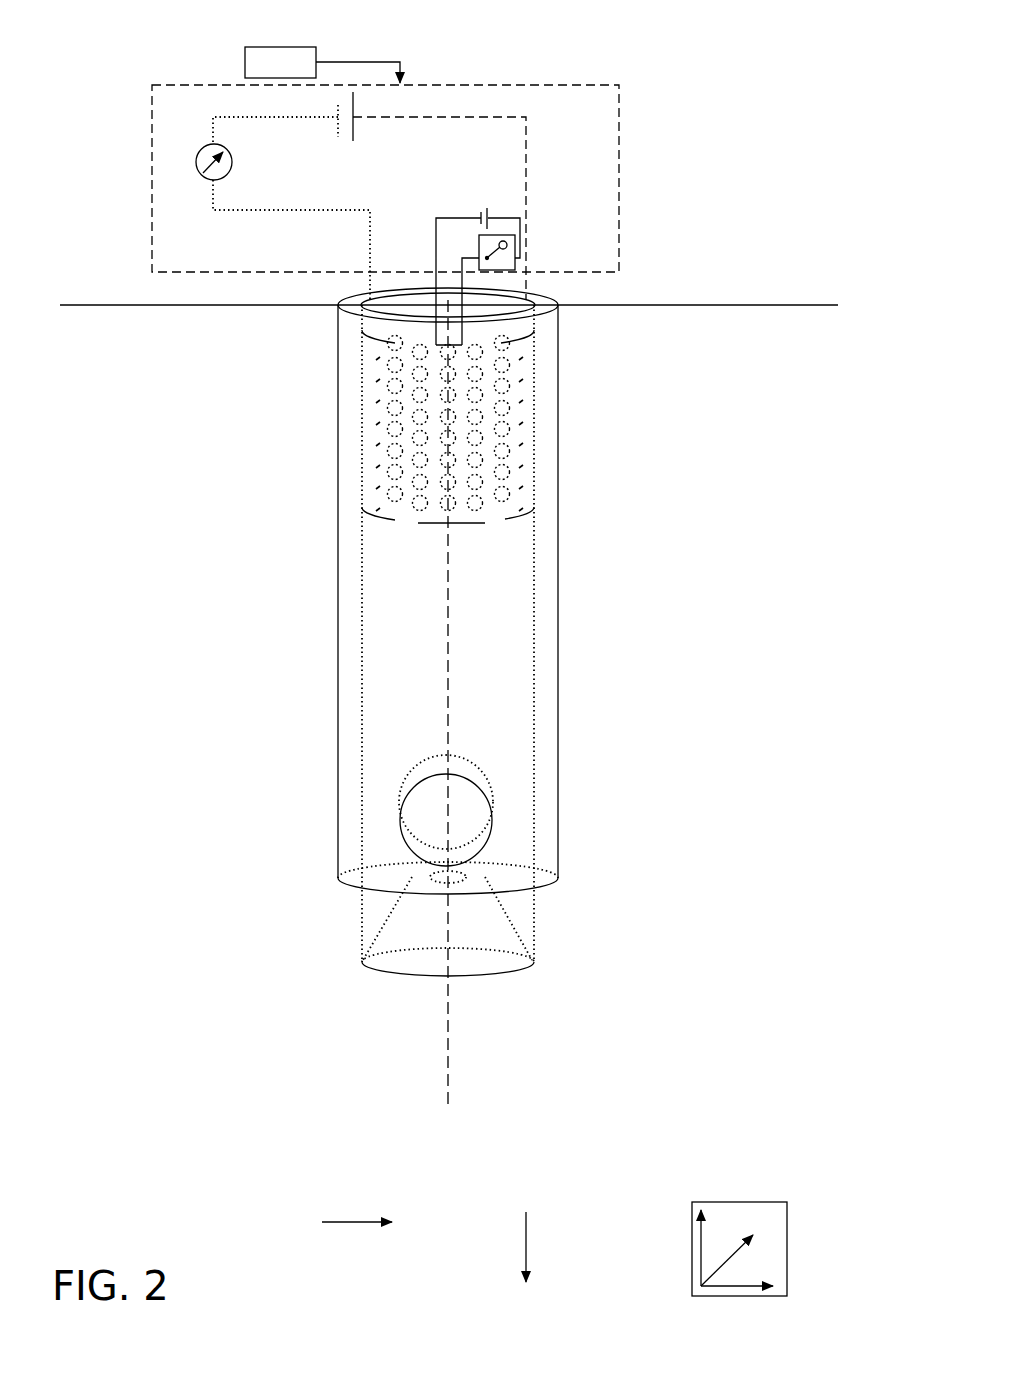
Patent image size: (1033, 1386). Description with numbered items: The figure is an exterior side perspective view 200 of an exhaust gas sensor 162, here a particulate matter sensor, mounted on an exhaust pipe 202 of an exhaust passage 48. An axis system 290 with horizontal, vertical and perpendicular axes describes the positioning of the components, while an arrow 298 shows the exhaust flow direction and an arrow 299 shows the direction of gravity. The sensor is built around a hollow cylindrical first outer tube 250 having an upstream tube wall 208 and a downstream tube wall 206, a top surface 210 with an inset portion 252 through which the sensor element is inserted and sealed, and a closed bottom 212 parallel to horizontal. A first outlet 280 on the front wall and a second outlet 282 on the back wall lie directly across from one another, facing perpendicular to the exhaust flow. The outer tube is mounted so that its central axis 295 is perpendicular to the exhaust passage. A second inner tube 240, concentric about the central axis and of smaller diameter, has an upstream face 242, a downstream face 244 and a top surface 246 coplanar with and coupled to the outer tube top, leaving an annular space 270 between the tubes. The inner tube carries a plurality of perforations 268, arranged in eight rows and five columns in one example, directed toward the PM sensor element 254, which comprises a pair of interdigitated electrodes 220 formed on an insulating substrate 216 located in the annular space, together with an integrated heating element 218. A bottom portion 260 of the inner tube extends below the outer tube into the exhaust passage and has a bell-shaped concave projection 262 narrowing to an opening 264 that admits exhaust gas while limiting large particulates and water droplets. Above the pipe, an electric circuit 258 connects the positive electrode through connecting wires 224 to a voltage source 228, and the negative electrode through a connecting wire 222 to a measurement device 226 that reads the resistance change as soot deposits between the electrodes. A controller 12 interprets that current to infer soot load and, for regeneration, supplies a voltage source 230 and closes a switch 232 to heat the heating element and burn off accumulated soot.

The controller 12 is at (322, 65).
The exhaust passage 48 is at (127, 864).
The exhaust gas sensor 162 is at (745, 188).
The exterior side perspective view 200 is at (250, 1259).
The exhaust pipe 202 is at (695, 305).
The downstream tube wall 206 is at (557, 765).
The upstream tube wall 208 is at (338, 632).
The top surface 210 is at (545, 300).
The bottom 212 is at (545, 885).
The substrate 216 is at (536, 518).
The heating element 218 is at (440, 252).
The interdigitated electrodes 220 is at (458, 633).
The connecting wire 222 is at (276, 210).
The connecting wires 224 is at (511, 118).
The measurement device 226 is at (196, 163).
The voltage source 228 is at (336, 146).
The voltage source 230 is at (481, 196).
The switch 232 is at (474, 251).
The second inner tube 240 is at (350, 568).
The upstream face 242 is at (362, 686).
The downstream face 244 is at (535, 685).
The top surface 246 is at (560, 308).
The first outer tube 250 is at (305, 757).
The inset portion 252 is at (348, 288).
The PM sensor element 254 is at (424, 570).
The electric circuit 258 is at (148, 82).
The bottom portion 260 is at (328, 928).
The concave projection 262 is at (512, 938).
The opening 264 is at (435, 884).
The perforations 268 is at (451, 529).
The annular space 270 is at (545, 807).
The first outlet 280 is at (490, 840).
The second outlet 282 is at (487, 780).
The axis system 290 is at (752, 1202).
The central axis 295 is at (448, 1090).
The arrow 298 is at (353, 1222).
The arrow 299 is at (528, 1236).